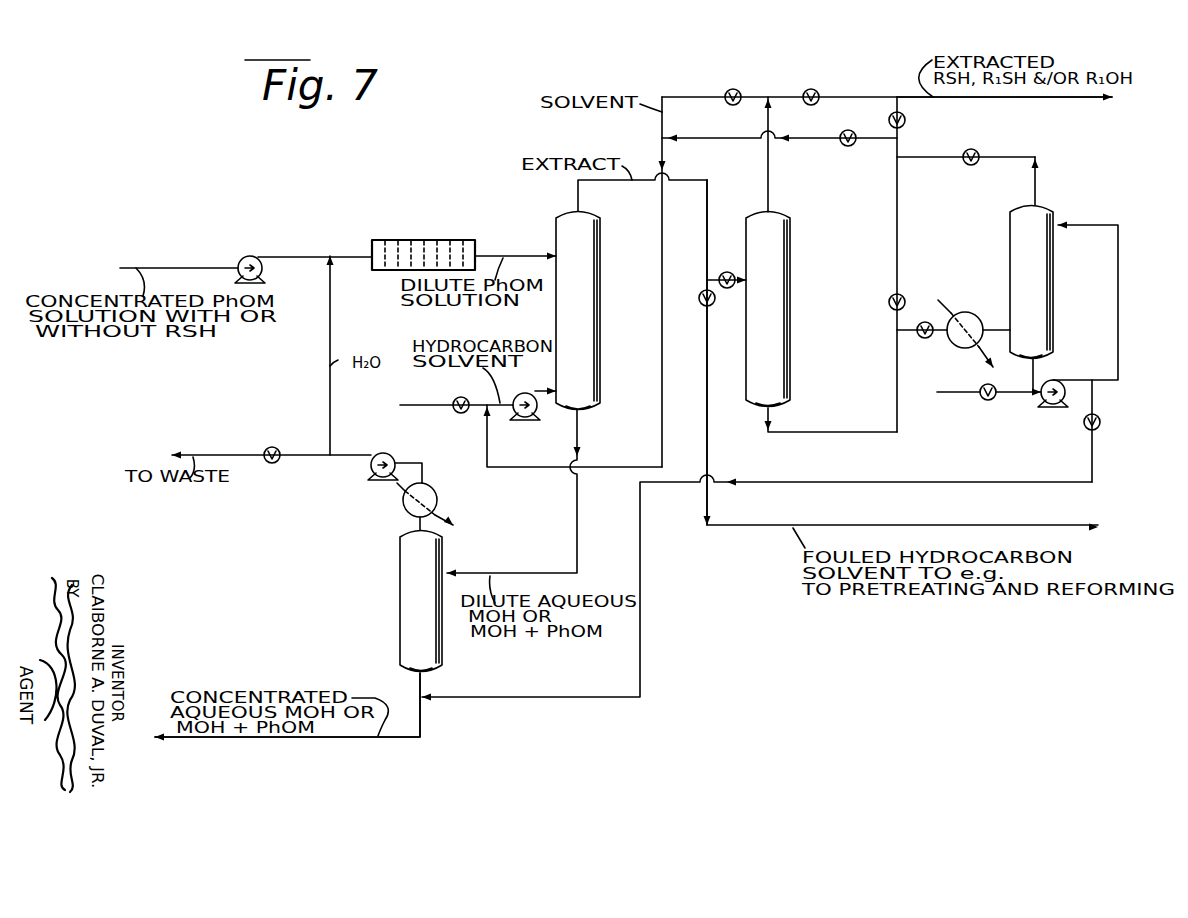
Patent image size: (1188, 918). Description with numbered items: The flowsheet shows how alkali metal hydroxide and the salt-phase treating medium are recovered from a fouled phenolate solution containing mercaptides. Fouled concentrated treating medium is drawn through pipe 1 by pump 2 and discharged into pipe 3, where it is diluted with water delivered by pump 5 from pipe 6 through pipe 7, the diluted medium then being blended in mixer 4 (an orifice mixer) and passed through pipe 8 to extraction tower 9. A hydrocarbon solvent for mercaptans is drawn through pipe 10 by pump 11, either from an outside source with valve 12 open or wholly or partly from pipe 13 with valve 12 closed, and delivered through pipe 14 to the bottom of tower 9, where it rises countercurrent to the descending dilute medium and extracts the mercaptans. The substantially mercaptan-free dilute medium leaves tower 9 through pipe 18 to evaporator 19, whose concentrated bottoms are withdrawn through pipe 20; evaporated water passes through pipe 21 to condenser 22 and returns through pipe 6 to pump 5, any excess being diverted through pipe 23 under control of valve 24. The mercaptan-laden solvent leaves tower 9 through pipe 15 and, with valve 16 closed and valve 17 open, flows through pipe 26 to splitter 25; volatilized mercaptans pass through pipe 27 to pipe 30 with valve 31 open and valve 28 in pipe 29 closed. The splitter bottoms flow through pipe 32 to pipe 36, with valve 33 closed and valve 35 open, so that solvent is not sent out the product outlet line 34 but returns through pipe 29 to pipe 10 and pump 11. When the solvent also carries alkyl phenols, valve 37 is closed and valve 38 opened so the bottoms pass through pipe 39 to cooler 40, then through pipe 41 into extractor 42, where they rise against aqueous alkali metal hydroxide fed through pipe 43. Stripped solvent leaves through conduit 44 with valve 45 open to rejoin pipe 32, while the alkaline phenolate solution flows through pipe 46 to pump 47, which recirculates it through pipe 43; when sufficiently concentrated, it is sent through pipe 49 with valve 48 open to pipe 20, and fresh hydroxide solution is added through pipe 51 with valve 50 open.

The pipe 1 is at (200, 266).
The pump 2 is at (260, 260).
The pipe 3 is at (322, 257).
The mixer 4 is at (462, 241).
The pump 5 is at (377, 480).
The pipe 6 is at (422, 474).
The pipe 7 is at (330, 380).
The pipe 8 is at (500, 262).
The extraction tower 9 is at (597, 308).
The pipe 10 is at (475, 410).
The pump 11 is at (522, 418).
The valve 12 is at (457, 397).
The pipe 13 is at (512, 467).
The pipe 14 is at (541, 392).
The pipe 15 is at (707, 366).
The valve 16 is at (698, 292).
The valve 17 is at (731, 266).
The pipe 18 is at (577, 530).
The evaporator 19 is at (398, 588).
The pipe 20 is at (325, 738).
The pipe 21 is at (417, 522).
The condenser 22 is at (438, 494).
The pipe 23 is at (315, 456).
The valve 24 is at (268, 462).
The splitter 25 is at (792, 362).
The pipe 26 is at (733, 290).
The pipe 27 is at (768, 182).
The valve 28 is at (736, 90).
The pipe 29 is at (662, 248).
The pipe 30 is at (880, 97).
The valve 31 is at (815, 90).
The pipe 32 is at (897, 238).
The valve 33 is at (905, 125).
The product outlet line 34 is at (900, 100).
The valve 35 is at (852, 147).
The pipe 36 is at (730, 138).
The valve 37 is at (891, 296).
The valve 38 is at (933, 336).
The pipe 39 is at (908, 334).
The cooler 40 is at (975, 312).
The pipe 41 is at (993, 330).
The extractor 42 is at (1050, 322).
The pipe 43 is at (1118, 284).
The conduit 44 is at (1035, 184).
The valve 45 is at (976, 150).
The pipe 46 is at (1040, 376).
The pump 47 is at (1062, 410).
The valve 48 is at (1100, 426).
The pipe 49 is at (942, 482).
The valve 50 is at (984, 400).
The pipe 51 is at (1006, 396).